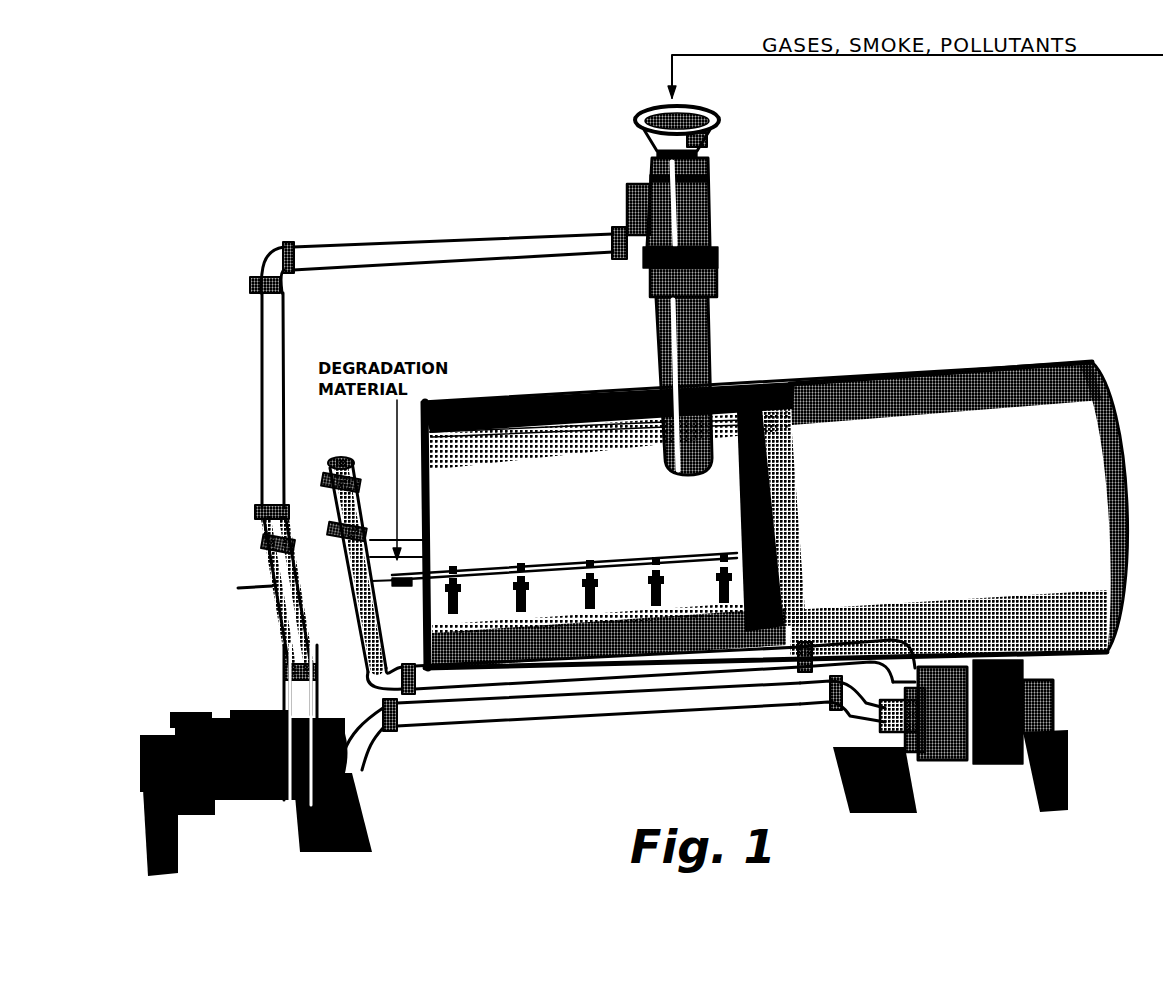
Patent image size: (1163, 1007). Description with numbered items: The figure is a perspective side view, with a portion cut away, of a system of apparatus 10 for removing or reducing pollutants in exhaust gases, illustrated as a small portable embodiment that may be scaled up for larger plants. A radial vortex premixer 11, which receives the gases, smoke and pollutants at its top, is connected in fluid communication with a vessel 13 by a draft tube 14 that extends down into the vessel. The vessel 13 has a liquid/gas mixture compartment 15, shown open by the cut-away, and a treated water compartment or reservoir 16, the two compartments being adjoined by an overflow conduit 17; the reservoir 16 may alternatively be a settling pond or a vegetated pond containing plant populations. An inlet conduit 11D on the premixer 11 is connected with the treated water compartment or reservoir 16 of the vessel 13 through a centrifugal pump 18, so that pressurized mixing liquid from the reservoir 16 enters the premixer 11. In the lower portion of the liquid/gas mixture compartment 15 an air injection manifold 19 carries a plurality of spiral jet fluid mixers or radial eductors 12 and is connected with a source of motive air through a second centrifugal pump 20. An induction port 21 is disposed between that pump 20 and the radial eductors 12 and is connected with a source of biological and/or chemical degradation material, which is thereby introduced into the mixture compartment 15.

The system of apparatus 10 is at (1066, 252).
The radial vortex premixer 11 is at (642, 200).
The inlet conduit 11D is at (633, 212).
The radial eductor 12 is at (513, 604).
The vessel 13 is at (900, 374).
The draft tube 14 is at (655, 315).
The liquid/gas mixture compartment 15 is at (578, 520).
The treated water compartment or reservoir 16 is at (945, 520).
The overflow conduit 17 is at (576, 400).
The centrifugal pump 18 is at (262, 800).
The air injection manifold 19 is at (478, 576).
The centrifugal pump 20 is at (945, 762).
The induction port 21 is at (413, 583).